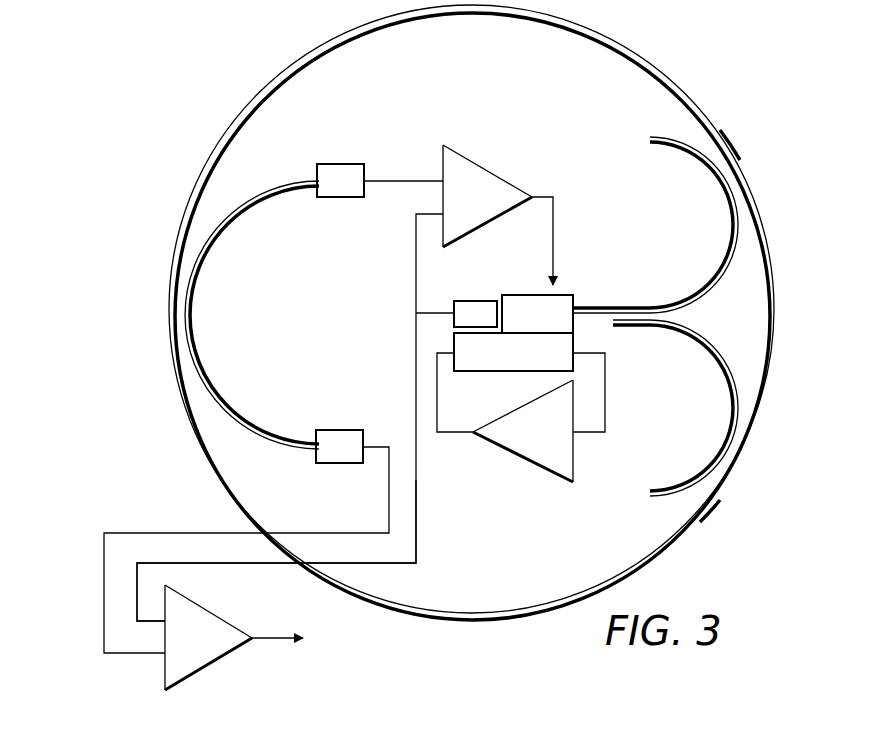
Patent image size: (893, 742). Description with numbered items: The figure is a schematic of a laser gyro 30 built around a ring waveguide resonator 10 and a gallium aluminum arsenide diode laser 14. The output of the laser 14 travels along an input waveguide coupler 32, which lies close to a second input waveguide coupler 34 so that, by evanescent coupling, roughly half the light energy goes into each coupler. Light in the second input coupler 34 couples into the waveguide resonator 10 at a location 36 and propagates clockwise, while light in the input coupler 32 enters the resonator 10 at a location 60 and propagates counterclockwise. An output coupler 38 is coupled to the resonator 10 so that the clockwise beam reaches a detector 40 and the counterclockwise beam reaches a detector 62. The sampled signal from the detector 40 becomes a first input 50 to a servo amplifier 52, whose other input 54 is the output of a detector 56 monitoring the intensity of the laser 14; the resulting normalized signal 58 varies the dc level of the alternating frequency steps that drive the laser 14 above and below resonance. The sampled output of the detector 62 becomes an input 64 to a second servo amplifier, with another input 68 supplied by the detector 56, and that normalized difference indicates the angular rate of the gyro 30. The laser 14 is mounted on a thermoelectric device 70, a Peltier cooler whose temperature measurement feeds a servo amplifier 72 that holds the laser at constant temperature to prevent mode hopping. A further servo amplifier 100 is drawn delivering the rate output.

The waveguide resonator 10 is at (205, 168).
The laser gyro 30 is at (248, 85).
The coupling location 36 is at (724, 490).
The coupling location 60 is at (733, 152).
The output coupler 38 is at (237, 414).
The detector 40 is at (343, 198).
The first input 50 is at (408, 178).
The servo amplifier 52 is at (490, 170).
The other input 54 is at (300, 417).
The normalized signal 58 is at (560, 226).
The laser 14 is at (563, 293).
The detector 56 is at (457, 323).
The thermoelectric device 70 is at (488, 366).
The servo amplifier 72 is at (515, 447).
The input waveguide coupler 32 is at (697, 288).
The second input waveguide coupler 34 is at (677, 335).
The detector 62 is at (343, 465).
The input 64 is at (103, 598).
The another input 68 is at (424, 549).
The servo amplifier 100 is at (204, 609).